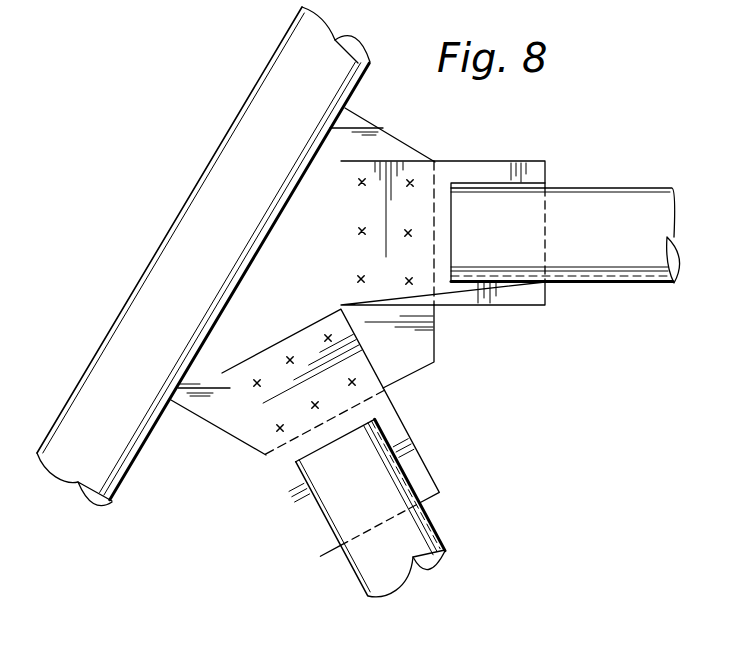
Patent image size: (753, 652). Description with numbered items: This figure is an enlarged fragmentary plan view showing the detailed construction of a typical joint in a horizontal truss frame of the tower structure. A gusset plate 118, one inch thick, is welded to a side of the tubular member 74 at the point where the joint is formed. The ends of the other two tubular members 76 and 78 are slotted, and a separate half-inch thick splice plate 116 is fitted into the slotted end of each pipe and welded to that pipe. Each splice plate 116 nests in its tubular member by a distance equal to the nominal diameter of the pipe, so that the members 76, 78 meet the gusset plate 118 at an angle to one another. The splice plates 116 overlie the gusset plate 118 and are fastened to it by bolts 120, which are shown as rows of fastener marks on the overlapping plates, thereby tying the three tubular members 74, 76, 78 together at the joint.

The tubular member 74 is at (192, 226).
The tubular member 76 is at (414, 558).
The tubular member 78 is at (608, 212).
The splice plate 116 is at (553, 140).
The gusset plate 118 is at (415, 348).
The bolts 120 is at (328, 336).